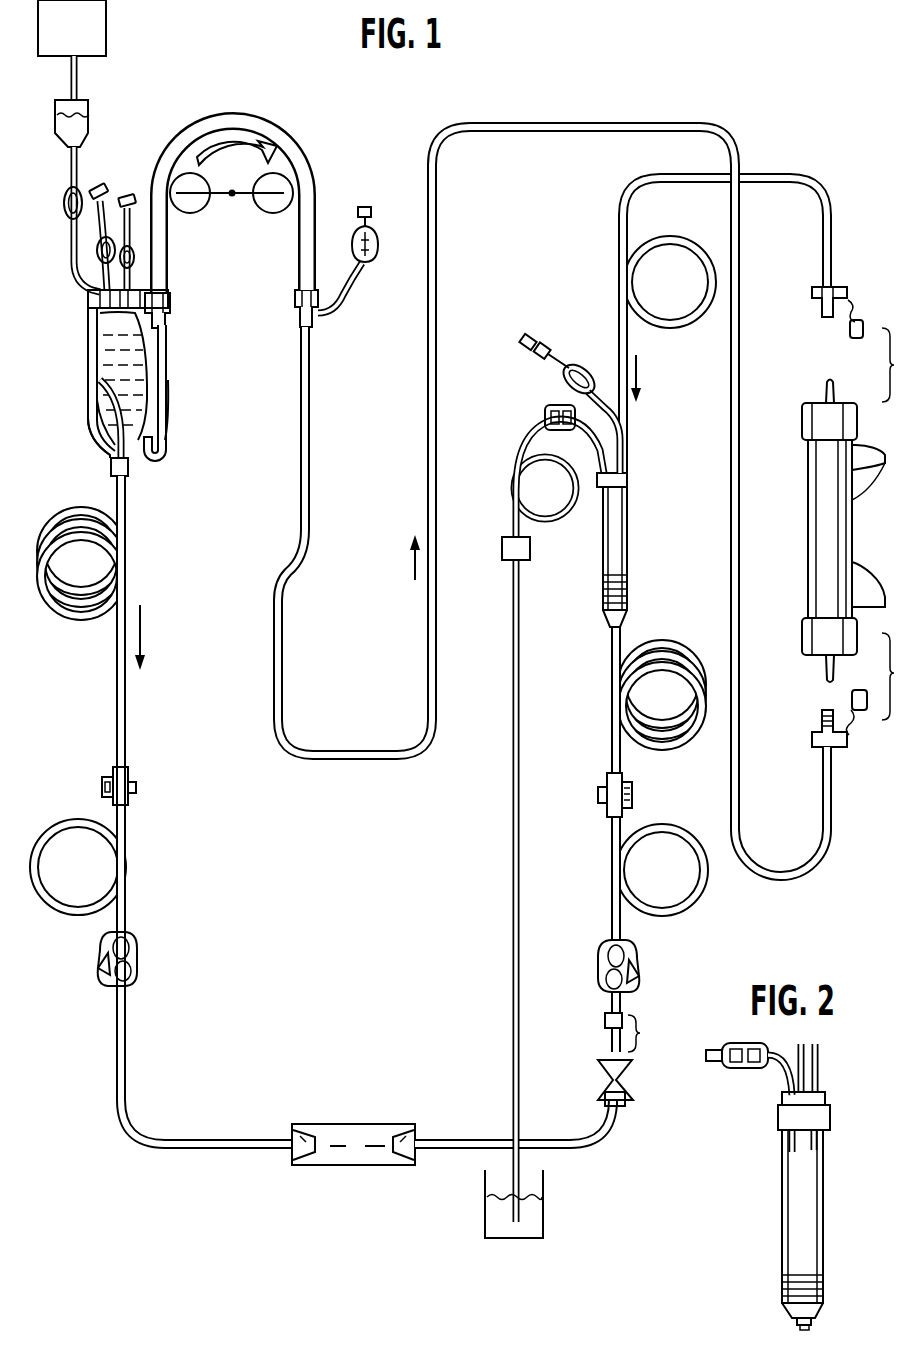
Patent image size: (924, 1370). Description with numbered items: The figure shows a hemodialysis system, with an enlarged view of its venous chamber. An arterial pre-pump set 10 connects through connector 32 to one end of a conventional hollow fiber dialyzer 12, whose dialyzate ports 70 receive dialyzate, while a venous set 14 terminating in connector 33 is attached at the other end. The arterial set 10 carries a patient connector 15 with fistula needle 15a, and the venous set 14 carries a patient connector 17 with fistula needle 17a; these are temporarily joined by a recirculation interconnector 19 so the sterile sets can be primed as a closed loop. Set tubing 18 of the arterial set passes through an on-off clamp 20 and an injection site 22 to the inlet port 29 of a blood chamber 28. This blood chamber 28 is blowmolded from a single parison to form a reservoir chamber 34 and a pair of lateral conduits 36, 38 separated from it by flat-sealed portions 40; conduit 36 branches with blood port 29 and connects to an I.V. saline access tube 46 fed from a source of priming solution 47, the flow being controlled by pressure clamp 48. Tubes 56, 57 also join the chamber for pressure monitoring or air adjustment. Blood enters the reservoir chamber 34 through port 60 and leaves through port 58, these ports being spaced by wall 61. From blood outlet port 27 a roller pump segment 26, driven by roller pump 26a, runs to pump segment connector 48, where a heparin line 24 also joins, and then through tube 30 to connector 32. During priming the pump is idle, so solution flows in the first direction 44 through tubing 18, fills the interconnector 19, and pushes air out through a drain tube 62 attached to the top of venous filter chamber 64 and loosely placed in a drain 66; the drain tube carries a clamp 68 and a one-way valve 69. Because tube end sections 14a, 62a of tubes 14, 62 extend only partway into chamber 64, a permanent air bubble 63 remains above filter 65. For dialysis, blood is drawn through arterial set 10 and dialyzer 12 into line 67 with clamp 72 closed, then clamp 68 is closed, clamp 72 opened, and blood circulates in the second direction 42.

In FIG. 1, the arterial pre-pump set 10 is at (268, 578).
In FIG. 1, the hollow fiber dialyzer 12 is at (805, 488).
In FIG. 1, the venous set 14 is at (610, 205).
In FIG. 2, the venous set 14 is at (822, 1077).
In FIG. 2, the tube end section 14a is at (818, 1140).
In FIG. 1, the patient connector 15 is at (300, 1130).
In FIG. 1, the fistula needle 15a is at (333, 1146).
In FIG. 1, the patient connector 17 is at (403, 1130).
In FIG. 1, the fistula needle 17a is at (377, 1150).
In FIG. 1, the set tubing 18 is at (117, 690).
In FIG. 1, the recirculation interconnector 19 is at (330, 1166).
In FIG. 1, the on-off clamp 20 is at (138, 957).
In FIG. 1, the injection site 22 is at (130, 772).
In FIG. 1, the heparin line 24 is at (342, 313).
In FIG. 1, the roller pump segment 26 is at (262, 118).
In FIG. 1, the roller pump 26a is at (300, 133).
In FIG. 1, the blood outlet port 27 is at (172, 305).
In FIG. 1, the blood chamber 28 is at (176, 423).
In FIG. 1, the inlet port 29 is at (110, 466).
In FIG. 1, the tube 30 is at (427, 400).
In FIG. 1, the connector 32 is at (838, 748).
In FIG. 1, the connector 33 is at (847, 290).
In FIG. 1, the reservoir chamber 34 is at (100, 352).
In FIG. 1, the conduit 36 is at (90, 320).
In FIG. 1, the conduit 38 is at (170, 356).
In FIG. 1, the flat-sealed portions 40 is at (153, 405).
In FIG. 1, the second direction 42 is at (228, 140).
In FIG. 1, the first direction 44 is at (143, 625).
In FIG. 1, the I.V. saline access tube 46 is at (86, 152).
In FIG. 1, the source of I.V. or priming solution 47 is at (82, 34).
In FIG. 1, the pump segment connector 48 is at (100, 187).
In FIG. 1, the tube 56 is at (141, 290).
In FIG. 1, the tube 57 is at (126, 196).
In FIG. 1, the port 58 is at (176, 446).
In FIG. 1, the port 60 is at (112, 440).
In FIG. 1, the wall 61 is at (106, 386).
In FIG. 1, the drain tube 62 is at (512, 836).
In FIG. 2, the drain tube 62 is at (773, 1068).
In FIG. 2, the tube end section 62a is at (786, 1143).
In FIG. 2, the air bubble 63 is at (808, 1125).
In FIG. 1, the venous filter chamber 64 is at (630, 520).
In FIG. 2, the venous filter chamber 64 is at (800, 1222).
In FIG. 1, the filter 65 is at (628, 592).
In FIG. 2, the filter 65 is at (786, 1278).
In FIG. 1, the drain 66 is at (495, 1215).
In FIG. 1, the line 67 is at (631, 340).
In FIG. 1, the clamp 68 is at (545, 410).
In FIG. 1, the one-way valve 69 is at (508, 548).
In FIG. 1, the dialyzate ports 70 is at (880, 597).
In FIG. 1, the clamp 72 is at (637, 966).